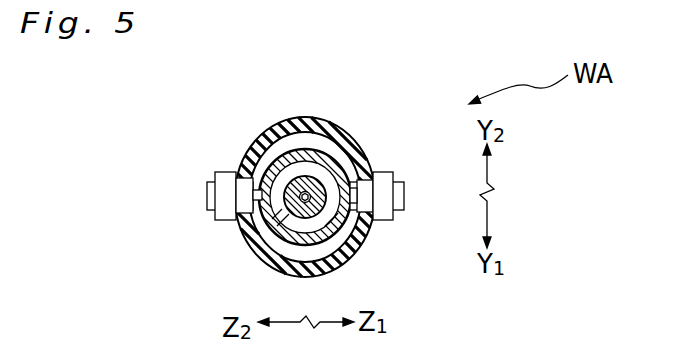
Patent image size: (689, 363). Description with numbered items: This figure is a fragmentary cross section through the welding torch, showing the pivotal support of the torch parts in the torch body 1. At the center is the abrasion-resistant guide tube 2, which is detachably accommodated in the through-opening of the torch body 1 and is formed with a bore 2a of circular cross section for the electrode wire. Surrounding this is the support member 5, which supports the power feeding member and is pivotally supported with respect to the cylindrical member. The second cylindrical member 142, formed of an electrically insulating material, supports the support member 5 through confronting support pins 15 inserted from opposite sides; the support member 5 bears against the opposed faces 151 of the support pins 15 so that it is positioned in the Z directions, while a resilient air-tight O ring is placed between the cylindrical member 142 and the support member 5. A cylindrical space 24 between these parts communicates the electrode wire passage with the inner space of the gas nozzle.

The torch body 1 is at (352, 256).
The abrasion-resistant guide tube 2 is at (265, 128).
The bore 2a is at (330, 165).
The support member 5 is at (304, 158).
The support pins 15 is at (399, 175).
The cylindrical space 24 is at (282, 206).
The second cylindrical member 142 is at (302, 150).
The opposed faces 151 is at (263, 194).